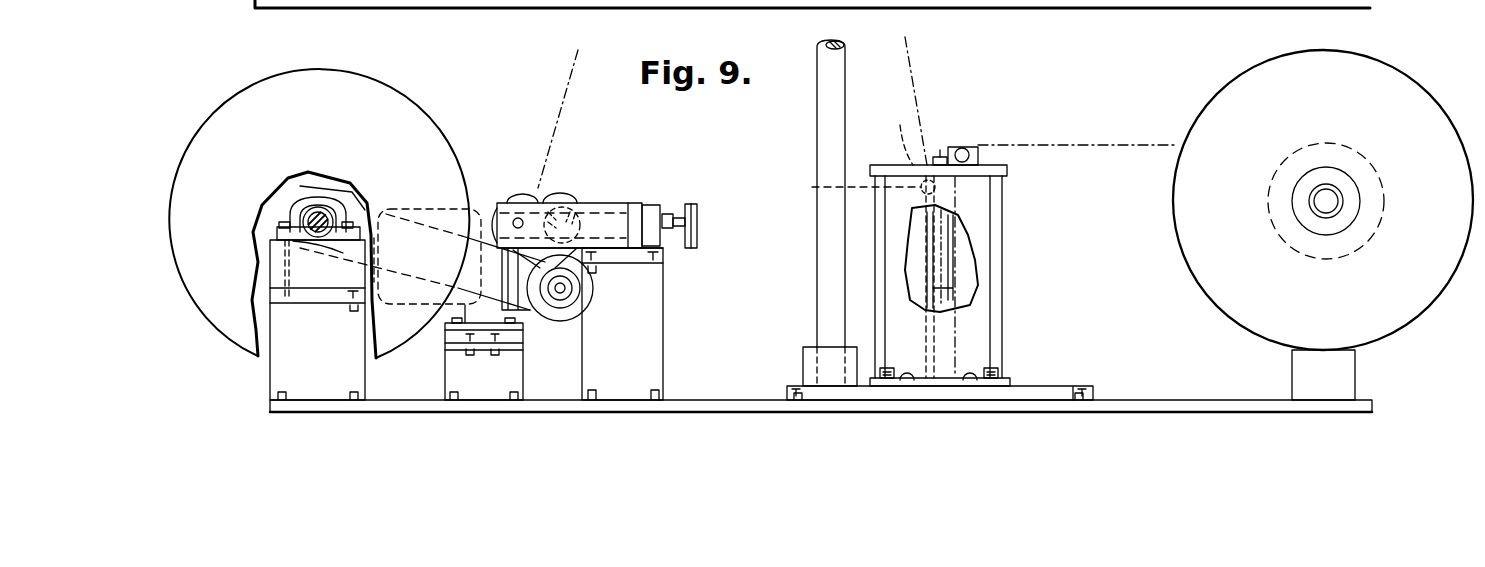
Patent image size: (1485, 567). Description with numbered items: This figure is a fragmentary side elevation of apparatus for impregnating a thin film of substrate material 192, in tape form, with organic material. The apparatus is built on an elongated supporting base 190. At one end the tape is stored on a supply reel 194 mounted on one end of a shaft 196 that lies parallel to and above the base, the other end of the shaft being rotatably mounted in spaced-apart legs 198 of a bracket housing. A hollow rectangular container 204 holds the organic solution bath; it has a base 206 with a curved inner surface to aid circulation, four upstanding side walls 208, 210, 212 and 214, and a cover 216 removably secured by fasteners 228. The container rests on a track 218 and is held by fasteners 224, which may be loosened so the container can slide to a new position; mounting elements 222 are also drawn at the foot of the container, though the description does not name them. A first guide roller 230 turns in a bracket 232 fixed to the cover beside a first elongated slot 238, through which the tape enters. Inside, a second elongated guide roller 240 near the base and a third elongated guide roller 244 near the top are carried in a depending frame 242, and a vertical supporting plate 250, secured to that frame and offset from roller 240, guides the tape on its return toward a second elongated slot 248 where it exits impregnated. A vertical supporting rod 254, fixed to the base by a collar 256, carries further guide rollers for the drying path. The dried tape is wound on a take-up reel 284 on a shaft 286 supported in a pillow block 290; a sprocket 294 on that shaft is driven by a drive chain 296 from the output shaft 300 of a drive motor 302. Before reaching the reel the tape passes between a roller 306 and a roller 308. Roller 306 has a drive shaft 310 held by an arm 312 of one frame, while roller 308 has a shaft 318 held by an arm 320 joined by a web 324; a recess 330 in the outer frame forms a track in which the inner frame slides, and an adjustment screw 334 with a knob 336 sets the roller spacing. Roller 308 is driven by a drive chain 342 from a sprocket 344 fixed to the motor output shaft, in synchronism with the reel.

The supporting base 190 is at (1150, 4).
The substrate material 192 is at (572, 106).
The supply reel 194 is at (1433, 97).
The shaft 196 is at (1314, 203).
The legs 198 is at (1292, 372).
The container 204 is at (943, 225).
The base of container 206 is at (1003, 380).
The side wall 208 is at (880, 265).
The side wall 210 is at (1002, 190).
The side wall 212 is at (1002, 214).
The side wall 214 is at (975, 240).
The cover 216 is at (880, 165).
The track 218 is at (1065, 385).
The mounting feet 222 is at (968, 385).
The fasteners 224 is at (887, 368).
The fasteners 228 is at (940, 157).
The first guide roller 230 is at (962, 147).
The bracket 232 is at (977, 145).
The first elongated slot 238 is at (990, 167).
The second elongated guide roller 240 is at (945, 368).
The frame 242 is at (968, 258).
The third elongated guide roller 244 is at (854, 188).
The second elongated slot 248 is at (896, 136).
The supporting plate 250 is at (922, 258).
The supporting rod 254 is at (817, 126).
The collar 256 is at (803, 355).
The take-up reel 284 is at (262, 82).
The shaft 286 is at (305, 226).
The pillow block 290 is at (285, 178).
The sprocket 294 is at (313, 193).
The drive chain 296 is at (350, 188).
The output shaft 300 is at (567, 290).
The drive motor 302 is at (468, 208).
The roller 306 is at (575, 200).
The roller 308 is at (520, 196).
The drive shaft 310 is at (560, 210).
The arm 312 is at (561, 8).
The shaft 318 is at (515, 218).
The arm 320 is at (606, 203).
The web 324 is at (650, 205).
The recess 330 is at (522, 8).
The adjustment screw 334 is at (690, 240).
The knob 336 is at (698, 218).
The drive chain 342 is at (503, 275).
The sprocket 344 is at (572, 314).